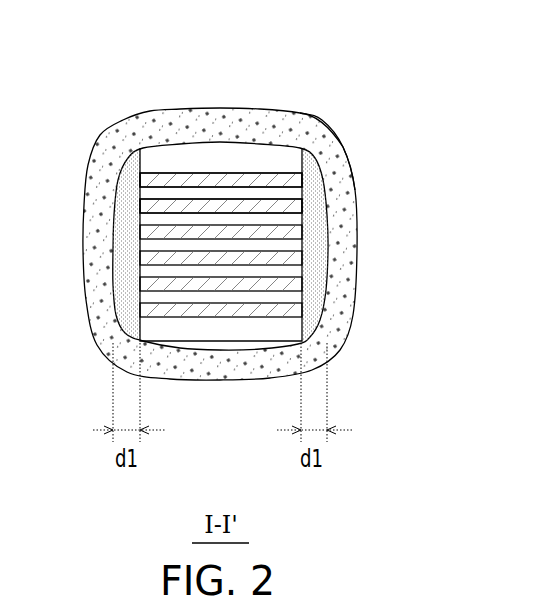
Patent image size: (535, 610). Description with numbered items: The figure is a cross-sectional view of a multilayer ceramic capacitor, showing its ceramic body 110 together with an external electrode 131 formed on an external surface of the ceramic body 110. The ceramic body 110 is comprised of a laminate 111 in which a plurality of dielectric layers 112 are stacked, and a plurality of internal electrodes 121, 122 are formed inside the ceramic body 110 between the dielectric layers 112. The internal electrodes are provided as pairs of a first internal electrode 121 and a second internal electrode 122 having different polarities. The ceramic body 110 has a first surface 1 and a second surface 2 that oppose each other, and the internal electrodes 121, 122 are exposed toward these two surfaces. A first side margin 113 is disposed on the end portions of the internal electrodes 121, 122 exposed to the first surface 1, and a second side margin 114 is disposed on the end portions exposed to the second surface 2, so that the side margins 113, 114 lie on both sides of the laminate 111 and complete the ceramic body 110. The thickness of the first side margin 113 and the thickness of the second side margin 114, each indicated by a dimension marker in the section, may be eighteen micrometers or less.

The first surface 1 is at (108, 277).
The second surface 2 is at (331, 229).
The ceramic body 110 is at (218, 336).
The laminate 111 is at (285, 132).
The dielectric layer 112 is at (253, 190).
The first side margin 113 is at (128, 172).
The second side margin 114 is at (327, 130).
The first internal electrode 121 is at (240, 177).
The second internal electrode 122 is at (268, 208).
The external electrode 131 is at (334, 186).